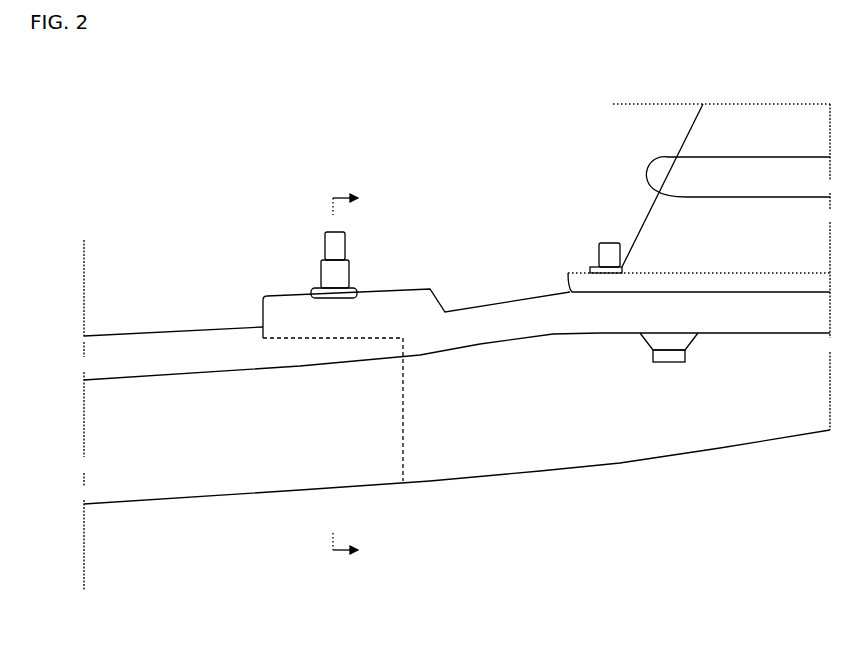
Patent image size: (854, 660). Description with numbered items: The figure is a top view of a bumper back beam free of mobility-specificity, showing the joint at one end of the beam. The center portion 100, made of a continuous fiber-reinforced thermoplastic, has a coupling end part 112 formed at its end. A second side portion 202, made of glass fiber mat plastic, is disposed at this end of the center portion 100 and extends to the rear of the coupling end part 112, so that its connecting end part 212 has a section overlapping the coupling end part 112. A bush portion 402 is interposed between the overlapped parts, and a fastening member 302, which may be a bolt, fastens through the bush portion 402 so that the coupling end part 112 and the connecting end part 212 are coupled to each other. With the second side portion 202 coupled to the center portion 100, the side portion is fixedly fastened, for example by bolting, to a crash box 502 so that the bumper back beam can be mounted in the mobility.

The center portion 100 is at (148, 504).
The coupling end part 112 is at (315, 352).
The second side portion 202 is at (535, 483).
The connecting end part 212 is at (372, 325).
The fastening member 302 is at (333, 242).
The bush portion 402 is at (323, 276).
The crash box 502 is at (627, 193).